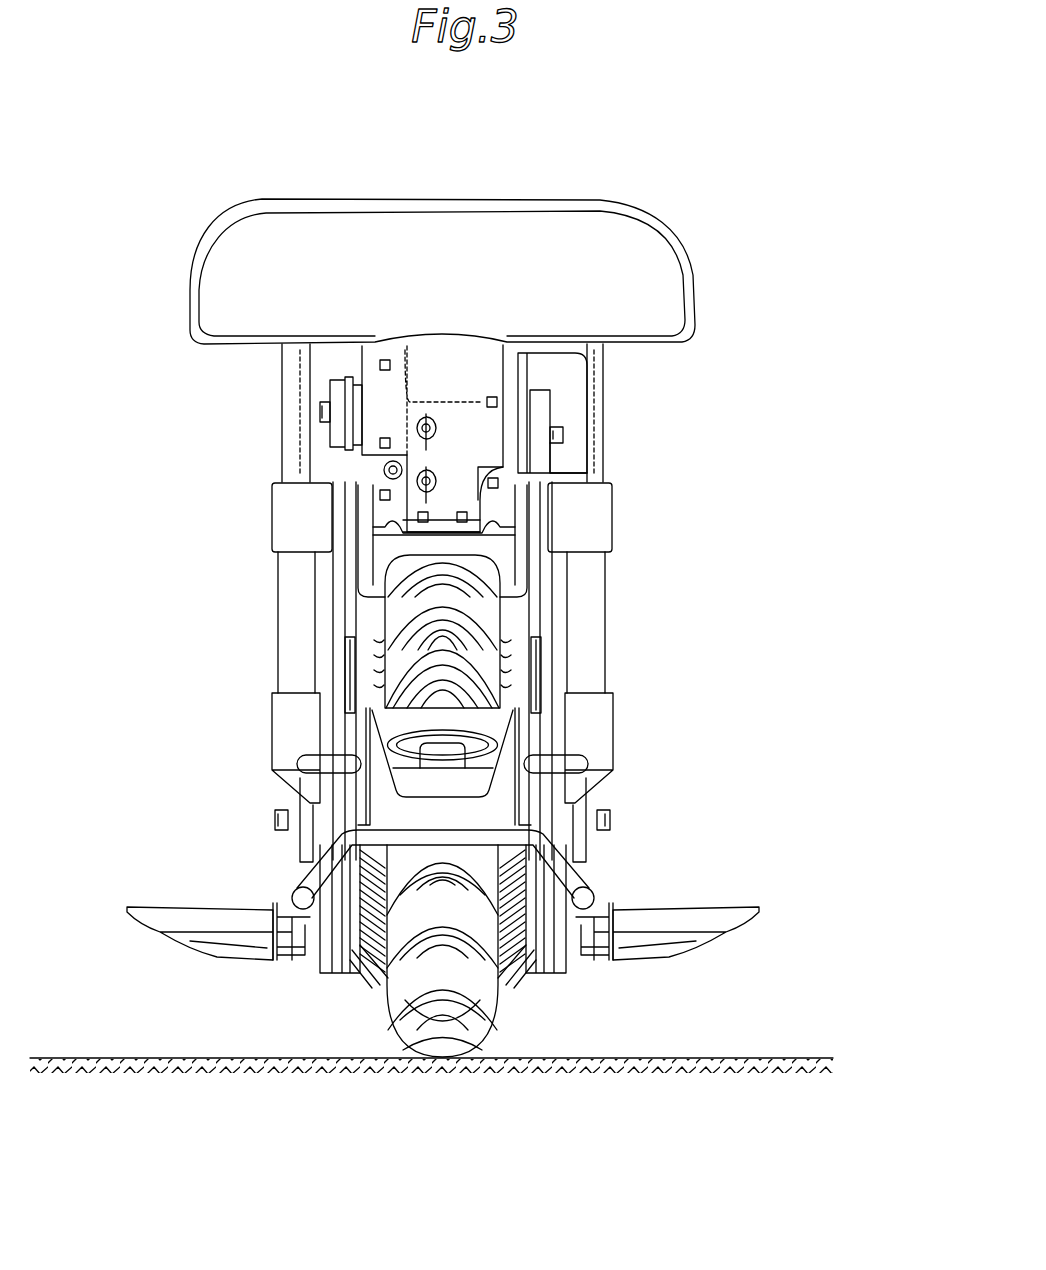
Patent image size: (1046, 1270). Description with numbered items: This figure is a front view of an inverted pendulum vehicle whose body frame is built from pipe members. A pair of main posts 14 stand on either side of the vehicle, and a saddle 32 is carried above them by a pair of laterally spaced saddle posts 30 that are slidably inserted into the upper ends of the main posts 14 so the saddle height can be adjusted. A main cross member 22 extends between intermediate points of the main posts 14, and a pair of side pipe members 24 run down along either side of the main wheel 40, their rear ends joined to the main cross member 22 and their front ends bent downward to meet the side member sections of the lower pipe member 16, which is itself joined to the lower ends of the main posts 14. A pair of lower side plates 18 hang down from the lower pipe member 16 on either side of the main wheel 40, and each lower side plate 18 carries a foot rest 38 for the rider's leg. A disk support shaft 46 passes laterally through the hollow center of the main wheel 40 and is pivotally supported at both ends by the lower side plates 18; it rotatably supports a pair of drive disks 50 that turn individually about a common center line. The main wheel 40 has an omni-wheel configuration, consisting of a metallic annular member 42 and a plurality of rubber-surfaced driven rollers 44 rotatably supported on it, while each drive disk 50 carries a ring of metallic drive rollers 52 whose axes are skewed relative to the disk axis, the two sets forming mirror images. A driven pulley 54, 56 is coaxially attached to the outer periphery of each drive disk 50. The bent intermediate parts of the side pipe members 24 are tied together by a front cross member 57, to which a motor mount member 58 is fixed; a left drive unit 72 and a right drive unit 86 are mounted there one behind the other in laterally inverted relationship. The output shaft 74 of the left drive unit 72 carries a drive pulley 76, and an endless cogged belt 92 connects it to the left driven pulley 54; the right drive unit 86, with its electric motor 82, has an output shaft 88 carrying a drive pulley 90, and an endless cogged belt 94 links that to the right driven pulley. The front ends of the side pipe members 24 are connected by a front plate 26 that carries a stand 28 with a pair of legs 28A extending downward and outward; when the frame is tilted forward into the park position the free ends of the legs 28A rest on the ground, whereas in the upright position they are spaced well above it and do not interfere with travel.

The main posts 14 is at (283, 608).
The lower pipe member 16 is at (498, 807).
The lower side plates 18 is at (270, 765).
The main cross member 22 is at (598, 520).
The side pipe members 24 is at (330, 712).
The front plate 26 is at (500, 836).
The stand 28 is at (460, 849).
The legs 28A is at (345, 975).
The saddle posts 30 is at (288, 361).
The saddle 32 is at (492, 232).
The foot rest 38 is at (183, 917).
The main wheel 40 is at (491, 1052).
The annular member 42 is at (393, 760).
The driven rollers 44 is at (441, 1018).
The disk support shaft 46 is at (587, 815).
The drive disks 50 is at (346, 747).
The drive rollers 52 is at (368, 952).
The driven pulley 54 is at (545, 660).
The driven pulley 56 is at (330, 676).
The front cross member 57 is at (511, 550).
The motor mount member 58 is at (480, 426).
The left drive unit 72 is at (543, 392).
The output shaft 74 is at (563, 435).
The drive pulley 76 is at (565, 462).
The electric motor 82 is at (365, 432).
The right drive unit 86 is at (344, 366).
The output shaft 88 is at (330, 410).
The drive pulley 90 is at (384, 463).
The endless cogged belt 92 is at (550, 612).
The endless cogged belt 94 is at (342, 578).